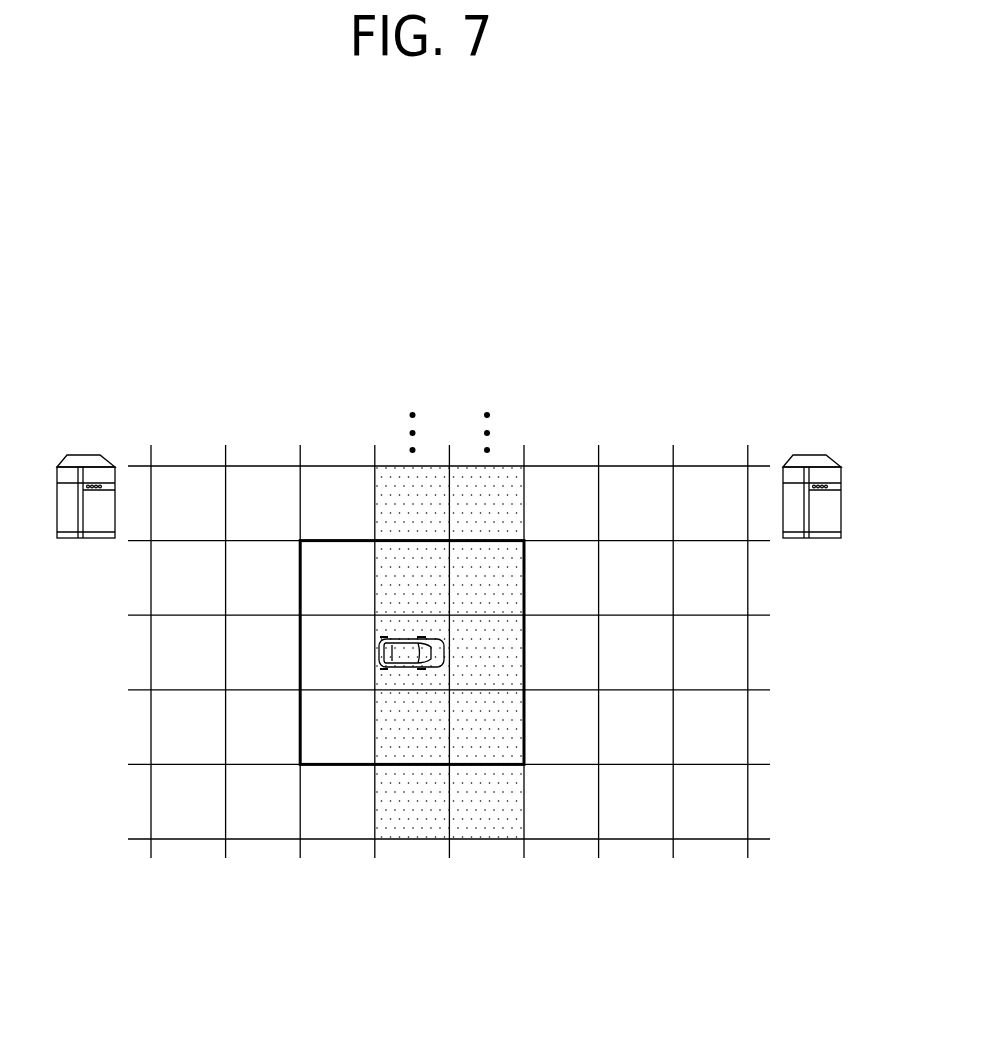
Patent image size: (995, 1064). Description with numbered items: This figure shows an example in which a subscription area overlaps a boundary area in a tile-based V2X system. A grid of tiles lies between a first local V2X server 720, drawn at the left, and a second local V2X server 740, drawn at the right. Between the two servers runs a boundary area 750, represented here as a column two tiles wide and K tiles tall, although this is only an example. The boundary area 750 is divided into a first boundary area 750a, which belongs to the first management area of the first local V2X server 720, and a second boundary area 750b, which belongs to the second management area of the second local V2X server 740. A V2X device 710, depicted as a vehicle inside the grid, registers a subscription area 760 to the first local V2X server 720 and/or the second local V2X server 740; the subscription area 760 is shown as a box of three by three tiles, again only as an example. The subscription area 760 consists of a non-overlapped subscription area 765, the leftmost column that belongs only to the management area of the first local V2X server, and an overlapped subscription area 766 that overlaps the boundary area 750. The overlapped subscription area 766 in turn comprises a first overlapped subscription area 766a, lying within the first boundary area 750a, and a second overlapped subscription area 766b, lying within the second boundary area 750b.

The V2X device 710 is at (380, 647).
The first local V2X server 720 is at (83, 454).
The second local V2X server 740 is at (810, 455).
The boundary area 750 is at (525, 359).
The first boundary area 750a is at (376, 405).
The second boundary area 750b is at (450, 405).
The subscription area 760 is at (300, 939).
The non-overlapped subscription area 765 is at (375, 768).
The overlapped subscription area 766 is at (522, 899).
The first overlapped subscription area 766a is at (450, 768).
The second overlapped subscription area 766b is at (450, 768).